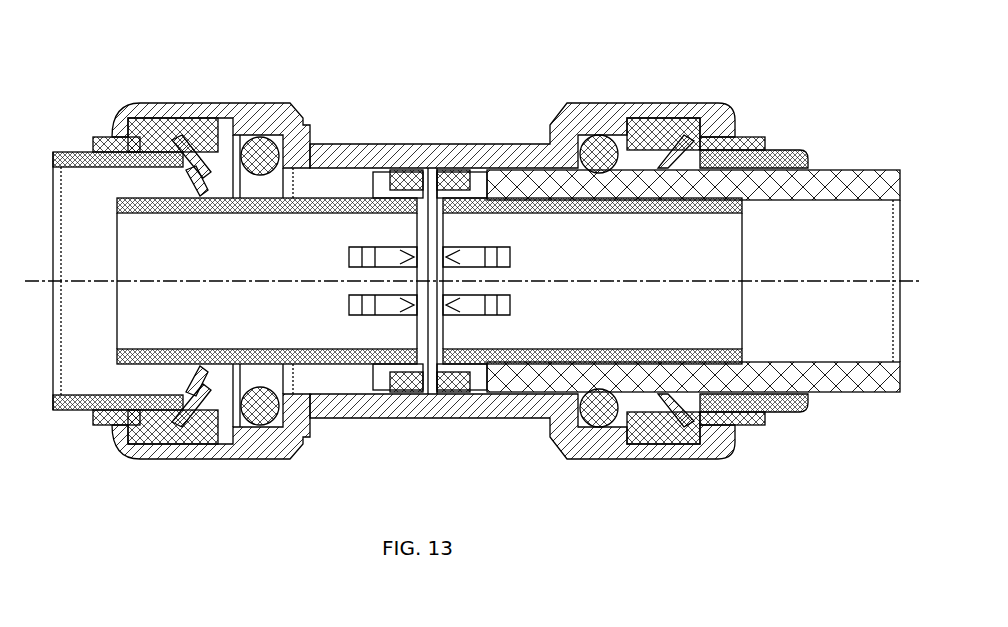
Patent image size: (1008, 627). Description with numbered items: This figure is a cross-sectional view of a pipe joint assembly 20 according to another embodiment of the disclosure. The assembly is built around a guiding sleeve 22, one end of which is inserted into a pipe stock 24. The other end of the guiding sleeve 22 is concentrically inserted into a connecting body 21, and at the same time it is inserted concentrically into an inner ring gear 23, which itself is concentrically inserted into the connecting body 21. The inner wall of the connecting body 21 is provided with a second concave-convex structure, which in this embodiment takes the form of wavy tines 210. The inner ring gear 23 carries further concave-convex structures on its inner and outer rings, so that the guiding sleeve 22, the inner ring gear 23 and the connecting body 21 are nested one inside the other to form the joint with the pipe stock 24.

The pipe joint assembly 20 is at (440, 31).
The connecting body 21 is at (289, 104).
The guiding sleeve 22 is at (572, 351).
The inner ring gear 23 is at (455, 172).
The wavy tines 210 is at (414, 170).
The pipe stock 24 is at (867, 191).